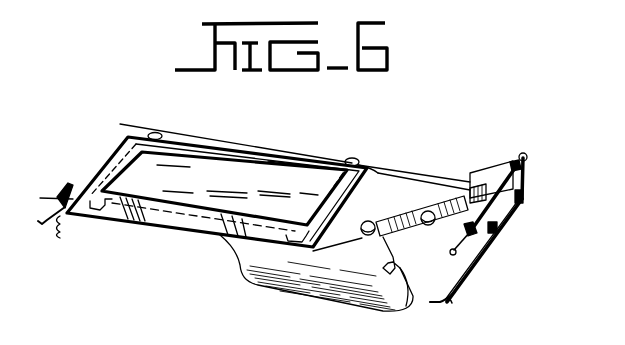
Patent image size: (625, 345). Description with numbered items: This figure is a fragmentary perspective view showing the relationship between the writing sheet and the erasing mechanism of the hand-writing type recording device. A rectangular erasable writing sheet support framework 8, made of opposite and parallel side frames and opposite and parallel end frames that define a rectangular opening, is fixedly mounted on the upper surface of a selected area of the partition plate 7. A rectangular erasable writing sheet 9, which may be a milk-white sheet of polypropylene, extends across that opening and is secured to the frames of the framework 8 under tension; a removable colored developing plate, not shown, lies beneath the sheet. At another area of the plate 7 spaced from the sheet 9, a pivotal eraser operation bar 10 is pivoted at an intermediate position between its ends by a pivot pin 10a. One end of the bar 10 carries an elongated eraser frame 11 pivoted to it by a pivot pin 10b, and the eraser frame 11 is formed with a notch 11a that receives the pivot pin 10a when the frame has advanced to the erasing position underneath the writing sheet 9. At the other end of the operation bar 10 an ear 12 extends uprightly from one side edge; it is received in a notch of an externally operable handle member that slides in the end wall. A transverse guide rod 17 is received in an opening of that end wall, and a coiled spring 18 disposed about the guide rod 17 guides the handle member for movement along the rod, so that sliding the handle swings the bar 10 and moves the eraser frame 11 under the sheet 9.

The partition plate 7 is at (457, 297).
The erasable writing sheet support framework 8 is at (260, 158).
The erasable writing sheet 9 is at (215, 167).
The eraser operation bar 10 is at (403, 214).
The pivot pin 10a is at (430, 210).
The pivot pin 10b is at (370, 220).
The eraser frame 11 is at (167, 232).
The notch 11a is at (398, 275).
The ear 12 is at (483, 168).
The transverse guide rod 17 is at (524, 186).
The coiled spring 18 is at (477, 260).